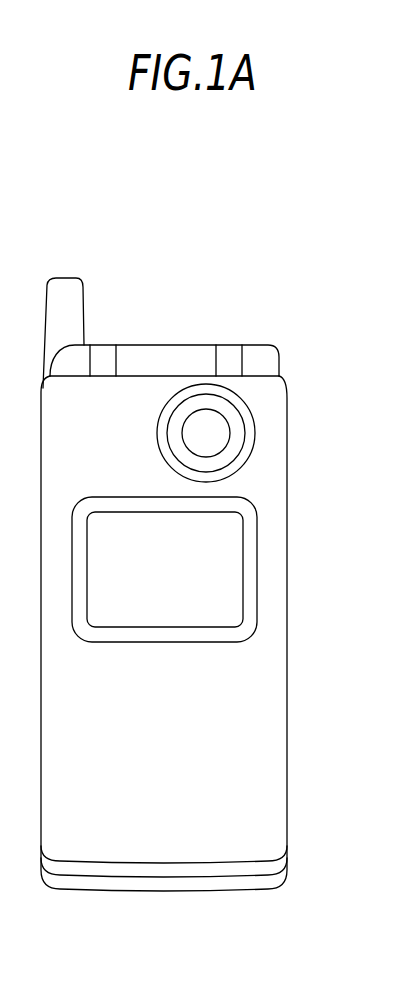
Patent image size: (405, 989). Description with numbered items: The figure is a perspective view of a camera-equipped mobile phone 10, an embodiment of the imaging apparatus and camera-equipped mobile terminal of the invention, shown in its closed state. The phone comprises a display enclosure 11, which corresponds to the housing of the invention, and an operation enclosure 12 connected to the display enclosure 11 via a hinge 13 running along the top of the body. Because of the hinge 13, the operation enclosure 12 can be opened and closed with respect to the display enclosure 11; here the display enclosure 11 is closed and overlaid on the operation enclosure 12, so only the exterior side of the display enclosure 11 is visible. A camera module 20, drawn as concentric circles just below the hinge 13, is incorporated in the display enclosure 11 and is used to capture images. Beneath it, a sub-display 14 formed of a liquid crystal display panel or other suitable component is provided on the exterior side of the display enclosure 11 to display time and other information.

The camera-equipped mobile phone 10 is at (233, 268).
The display enclosure 11 is at (243, 755).
The operation enclosure 12 is at (270, 877).
The hinge 13 is at (262, 362).
The sub-display 14 is at (223, 573).
The camera module 20 is at (210, 433).